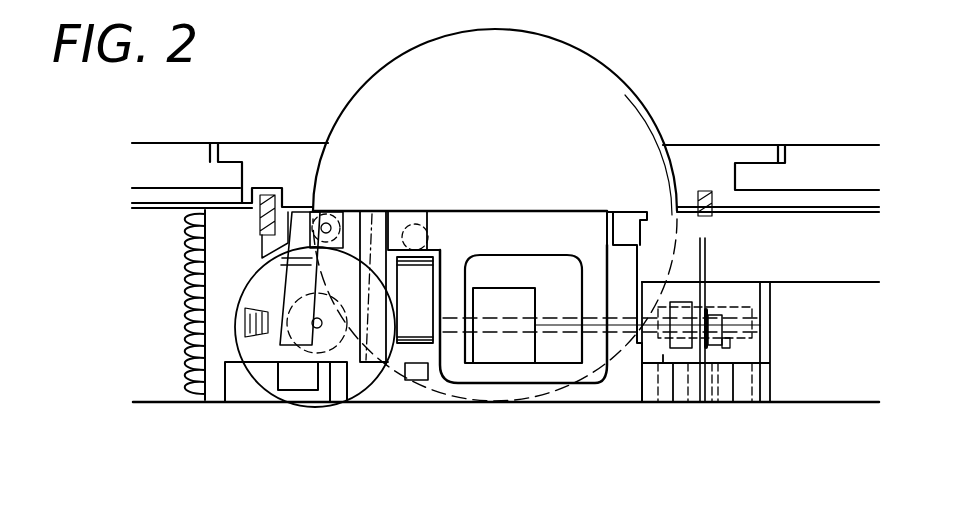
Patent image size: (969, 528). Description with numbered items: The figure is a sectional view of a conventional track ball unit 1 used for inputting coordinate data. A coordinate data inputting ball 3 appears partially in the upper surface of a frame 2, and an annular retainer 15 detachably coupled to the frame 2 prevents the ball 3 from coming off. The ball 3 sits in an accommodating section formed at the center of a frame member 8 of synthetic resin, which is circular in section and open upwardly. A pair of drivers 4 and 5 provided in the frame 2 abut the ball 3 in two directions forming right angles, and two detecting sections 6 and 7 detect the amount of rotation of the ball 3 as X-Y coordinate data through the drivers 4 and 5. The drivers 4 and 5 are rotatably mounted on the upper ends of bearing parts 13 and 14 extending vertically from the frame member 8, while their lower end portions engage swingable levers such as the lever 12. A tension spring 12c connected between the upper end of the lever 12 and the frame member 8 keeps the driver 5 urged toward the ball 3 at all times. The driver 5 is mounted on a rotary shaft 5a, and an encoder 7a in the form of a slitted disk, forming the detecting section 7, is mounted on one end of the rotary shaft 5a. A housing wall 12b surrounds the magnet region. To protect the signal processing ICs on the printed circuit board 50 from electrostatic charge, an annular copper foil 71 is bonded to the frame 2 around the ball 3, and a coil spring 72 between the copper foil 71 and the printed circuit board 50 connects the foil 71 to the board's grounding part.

The track ball unit 1 is at (346, 70).
The frame 2 is at (818, 140).
The coordinate data inputting ball 3 is at (596, 86).
The driver 4 is at (333, 390).
The driver 5 is at (505, 357).
The rotary shaft 5a is at (567, 330).
The detecting section 6 is at (260, 406).
The detecting section 7 is at (683, 380).
The encoder 7a is at (707, 262).
The frame member 8 is at (392, 384).
The swingable lever 12 is at (506, 235).
The housing spherical wall 12b is at (612, 357).
The tension spring 12c is at (420, 388).
The bearing part 13 is at (625, 252).
The bearing part 14 is at (370, 242).
The annular retainer 15 is at (277, 157).
The printed circuit board 50 is at (163, 403).
The annular copper foil 71 is at (143, 212).
The coil spring 72 is at (182, 296).